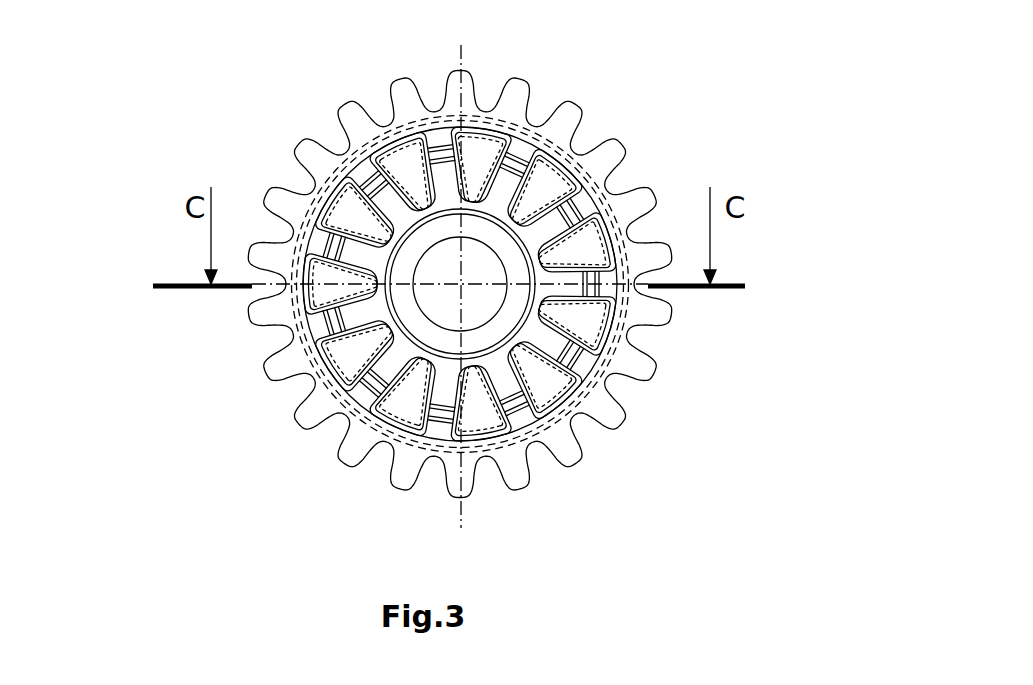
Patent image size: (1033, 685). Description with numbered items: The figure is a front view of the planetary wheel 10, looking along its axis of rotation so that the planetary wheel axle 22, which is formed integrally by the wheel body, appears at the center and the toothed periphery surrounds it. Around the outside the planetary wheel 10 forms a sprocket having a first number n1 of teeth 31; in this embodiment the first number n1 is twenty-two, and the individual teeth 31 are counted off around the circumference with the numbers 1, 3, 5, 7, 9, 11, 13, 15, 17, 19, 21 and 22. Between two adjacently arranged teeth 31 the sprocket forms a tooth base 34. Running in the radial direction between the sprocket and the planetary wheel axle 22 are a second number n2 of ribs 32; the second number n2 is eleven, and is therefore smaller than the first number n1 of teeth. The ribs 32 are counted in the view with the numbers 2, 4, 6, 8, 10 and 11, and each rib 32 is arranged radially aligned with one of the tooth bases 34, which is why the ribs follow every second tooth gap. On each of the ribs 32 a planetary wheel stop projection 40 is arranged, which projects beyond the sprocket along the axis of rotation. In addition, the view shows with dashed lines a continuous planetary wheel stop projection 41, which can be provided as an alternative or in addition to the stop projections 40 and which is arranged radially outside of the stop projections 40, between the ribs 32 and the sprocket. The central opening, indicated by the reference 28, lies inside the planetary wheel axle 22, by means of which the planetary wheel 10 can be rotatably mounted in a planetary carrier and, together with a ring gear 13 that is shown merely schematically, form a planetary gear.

The planetary wheel 10 is at (172, 118).
The central bore 28 is at (432, 322).
The teeth 31 is at (618, 148).
The ribs 32 is at (545, 230).
The tooth base 34 is at (608, 187).
The planetary wheel stop projection 40 is at (580, 163).
The continuous planetary wheel stop projection 41 is at (626, 338).
The first number of teeth n1 is at (393, 70).
The second number of ribs n2 is at (384, 197).
The tooth 1 is at (460, 95).
The spoke 2 is at (509, 184).
The tooth 3 is at (564, 122).
The spoke 4 is at (569, 286).
The tooth 5 is at (635, 204).
The spoke 6 is at (509, 380).
The tooth 7 is at (651, 311).
The spoke 8 is at (386, 367).
The tooth 9 is at (606, 410).
The tooth 11 / spoke 11 is at (451, 332).
The ring gear 13 is at (405, 469).
The tooth 15 is at (314, 410).
The tooth 17 is at (270, 311).
The tooth 19 is at (284, 204).
The tooth 21 is at (356, 122).
The planetary wheel axle 22 is at (405, 99).